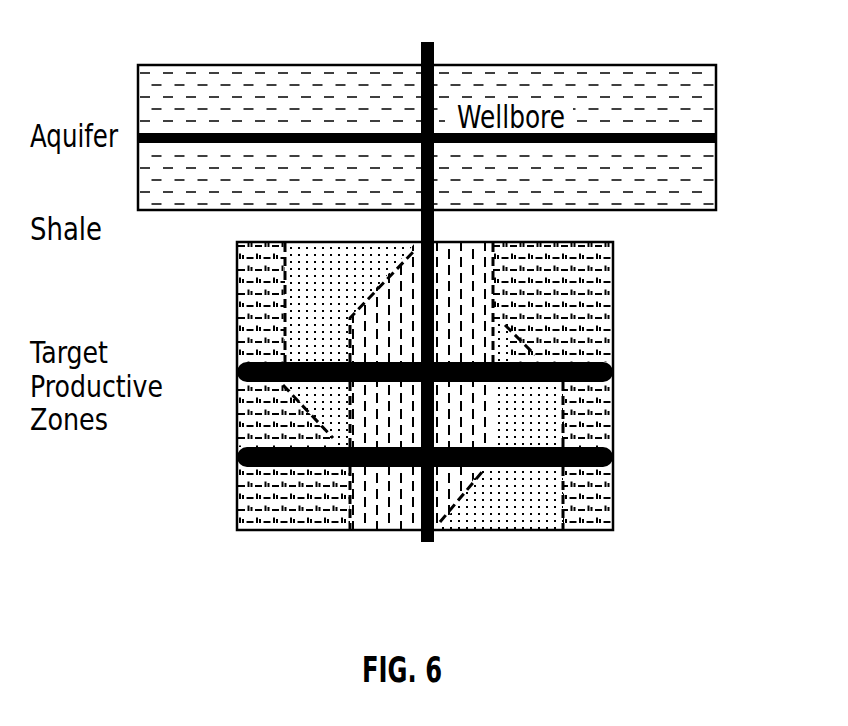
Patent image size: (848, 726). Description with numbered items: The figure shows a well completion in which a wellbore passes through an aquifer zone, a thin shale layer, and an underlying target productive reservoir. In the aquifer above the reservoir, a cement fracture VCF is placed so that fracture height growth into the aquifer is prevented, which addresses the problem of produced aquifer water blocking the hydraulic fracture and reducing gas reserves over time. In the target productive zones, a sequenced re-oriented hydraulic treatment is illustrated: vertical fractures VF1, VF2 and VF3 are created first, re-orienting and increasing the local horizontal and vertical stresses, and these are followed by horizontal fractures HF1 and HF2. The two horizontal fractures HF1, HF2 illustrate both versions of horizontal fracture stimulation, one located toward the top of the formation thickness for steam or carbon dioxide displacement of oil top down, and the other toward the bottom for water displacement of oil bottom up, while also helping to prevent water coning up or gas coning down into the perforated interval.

The cement fracture VCF is at (457, 136).
The vertical fracture VF1 is at (457, 302).
The vertical fracture VF2 is at (523, 479).
The vertical fracture VF3 is at (329, 478).
The horizontal fracture HF1 is at (457, 369).
The horizontal fracture HF2 is at (457, 459).